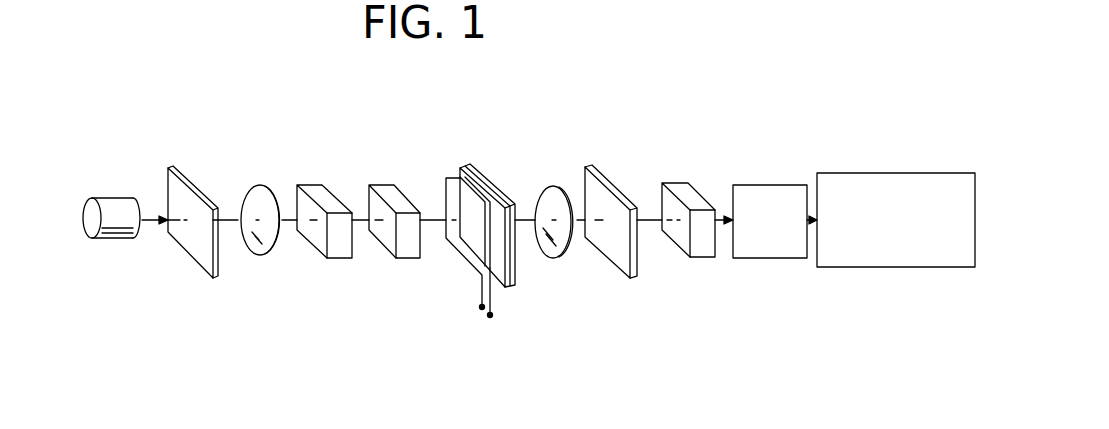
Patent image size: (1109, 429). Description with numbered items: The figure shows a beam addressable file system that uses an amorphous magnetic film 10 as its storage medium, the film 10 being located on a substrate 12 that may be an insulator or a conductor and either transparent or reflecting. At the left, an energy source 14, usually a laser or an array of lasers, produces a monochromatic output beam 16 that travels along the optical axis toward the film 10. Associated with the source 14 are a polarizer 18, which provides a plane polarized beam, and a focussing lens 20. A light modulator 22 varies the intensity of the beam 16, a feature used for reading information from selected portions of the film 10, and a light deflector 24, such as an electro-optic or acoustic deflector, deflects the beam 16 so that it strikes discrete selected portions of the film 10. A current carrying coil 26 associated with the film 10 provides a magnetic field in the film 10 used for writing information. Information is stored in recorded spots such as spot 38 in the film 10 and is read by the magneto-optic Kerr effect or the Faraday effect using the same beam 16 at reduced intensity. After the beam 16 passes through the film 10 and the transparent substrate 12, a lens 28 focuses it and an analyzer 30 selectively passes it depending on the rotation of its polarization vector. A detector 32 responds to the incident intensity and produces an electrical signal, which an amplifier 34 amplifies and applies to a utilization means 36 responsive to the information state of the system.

The film 10 is at (462, 213).
The substrate 12 is at (483, 178).
The energy source 14 is at (113, 199).
The output beam 16 is at (169, 222).
The polarizer 18 is at (200, 188).
The focussing lens 20 is at (261, 188).
The light modulator 22 is at (327, 200).
The light deflector 24 is at (396, 196).
The current carrying coil 26 is at (461, 252).
The lens 28 is at (552, 188).
The analyzer 30 is at (616, 192).
The detector 32 is at (701, 192).
The amplifier 34 is at (764, 183).
The utilization means 36 is at (838, 173).
The recorded spot 38 is at (474, 224).